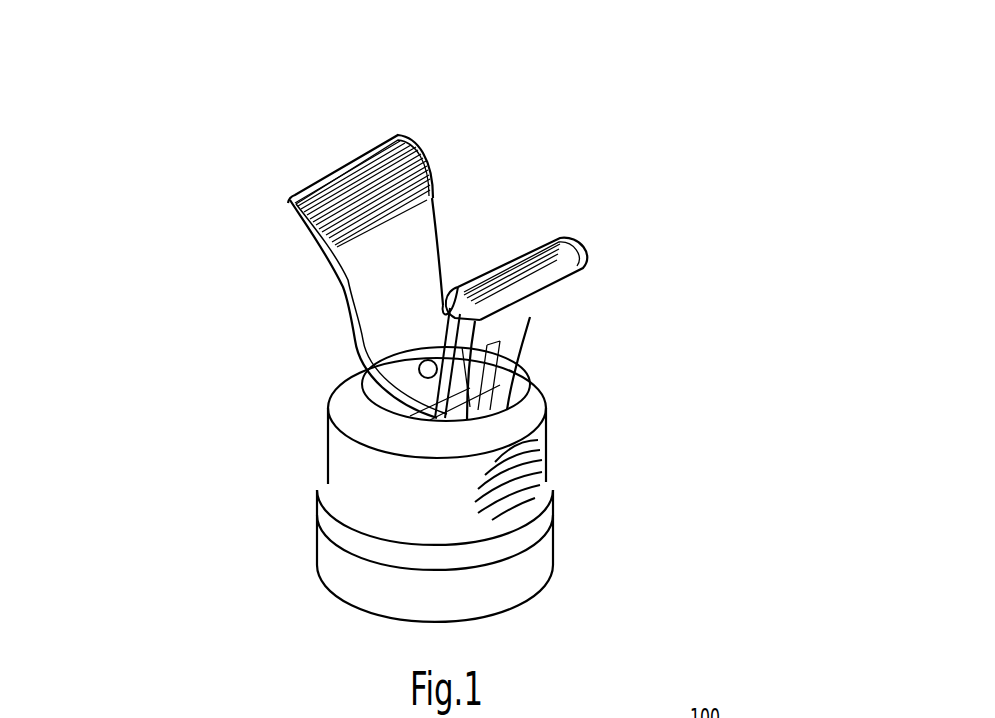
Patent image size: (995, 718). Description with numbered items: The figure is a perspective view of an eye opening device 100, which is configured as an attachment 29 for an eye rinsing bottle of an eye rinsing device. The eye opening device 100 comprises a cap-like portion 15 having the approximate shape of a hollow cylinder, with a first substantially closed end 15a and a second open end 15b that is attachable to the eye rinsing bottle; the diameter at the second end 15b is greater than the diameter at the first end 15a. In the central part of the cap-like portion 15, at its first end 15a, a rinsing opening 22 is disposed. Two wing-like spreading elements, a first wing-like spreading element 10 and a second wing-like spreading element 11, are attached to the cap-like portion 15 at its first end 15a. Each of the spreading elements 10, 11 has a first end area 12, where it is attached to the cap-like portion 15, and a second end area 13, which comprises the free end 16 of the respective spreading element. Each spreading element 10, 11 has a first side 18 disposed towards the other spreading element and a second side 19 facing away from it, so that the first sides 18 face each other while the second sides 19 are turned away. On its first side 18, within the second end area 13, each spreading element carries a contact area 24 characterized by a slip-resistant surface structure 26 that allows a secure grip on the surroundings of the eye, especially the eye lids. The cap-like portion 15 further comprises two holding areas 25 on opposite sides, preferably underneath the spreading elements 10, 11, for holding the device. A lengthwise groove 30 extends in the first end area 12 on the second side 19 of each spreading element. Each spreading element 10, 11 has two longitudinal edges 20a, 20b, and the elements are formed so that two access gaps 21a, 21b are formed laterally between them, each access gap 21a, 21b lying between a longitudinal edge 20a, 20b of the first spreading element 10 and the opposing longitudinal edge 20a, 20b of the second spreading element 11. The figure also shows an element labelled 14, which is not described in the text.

The first wing-like spreading element 10 is at (272, 145).
The eye opening device 100 is at (733, 152).
The attachment 29 is at (751, 206).
The second wing-like spreading element 11 is at (642, 268).
The first end area 12 is at (528, 355).
The second end area 13 is at (600, 227).
The clip arm 14 is at (545, 313).
The cap-like portion 15 is at (563, 452).
The first substantially closed end 15a is at (556, 385).
The second open end 15b is at (560, 590).
The free end 16 is at (590, 262).
The first side 18 is at (400, 258).
The second side 19 is at (467, 415).
The longitudinal edge 20a is at (432, 207).
The longitudinal edge 20b is at (440, 256).
The access gap 21a is at (478, 266).
The access gap 21b is at (458, 300).
The rinsing opening 22 is at (420, 370).
The contact area 24 is at (363, 155).
The holding area 25 is at (600, 488).
The slip-resistant surface structure 26 is at (537, 486).
The lengthwise groove 30 is at (535, 335).